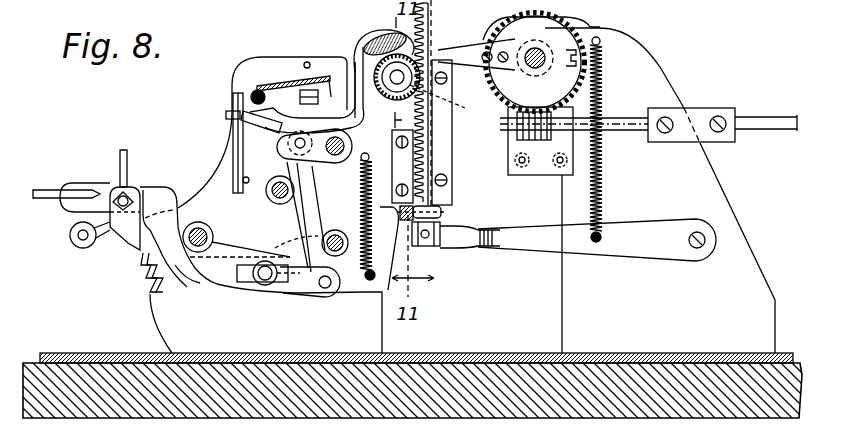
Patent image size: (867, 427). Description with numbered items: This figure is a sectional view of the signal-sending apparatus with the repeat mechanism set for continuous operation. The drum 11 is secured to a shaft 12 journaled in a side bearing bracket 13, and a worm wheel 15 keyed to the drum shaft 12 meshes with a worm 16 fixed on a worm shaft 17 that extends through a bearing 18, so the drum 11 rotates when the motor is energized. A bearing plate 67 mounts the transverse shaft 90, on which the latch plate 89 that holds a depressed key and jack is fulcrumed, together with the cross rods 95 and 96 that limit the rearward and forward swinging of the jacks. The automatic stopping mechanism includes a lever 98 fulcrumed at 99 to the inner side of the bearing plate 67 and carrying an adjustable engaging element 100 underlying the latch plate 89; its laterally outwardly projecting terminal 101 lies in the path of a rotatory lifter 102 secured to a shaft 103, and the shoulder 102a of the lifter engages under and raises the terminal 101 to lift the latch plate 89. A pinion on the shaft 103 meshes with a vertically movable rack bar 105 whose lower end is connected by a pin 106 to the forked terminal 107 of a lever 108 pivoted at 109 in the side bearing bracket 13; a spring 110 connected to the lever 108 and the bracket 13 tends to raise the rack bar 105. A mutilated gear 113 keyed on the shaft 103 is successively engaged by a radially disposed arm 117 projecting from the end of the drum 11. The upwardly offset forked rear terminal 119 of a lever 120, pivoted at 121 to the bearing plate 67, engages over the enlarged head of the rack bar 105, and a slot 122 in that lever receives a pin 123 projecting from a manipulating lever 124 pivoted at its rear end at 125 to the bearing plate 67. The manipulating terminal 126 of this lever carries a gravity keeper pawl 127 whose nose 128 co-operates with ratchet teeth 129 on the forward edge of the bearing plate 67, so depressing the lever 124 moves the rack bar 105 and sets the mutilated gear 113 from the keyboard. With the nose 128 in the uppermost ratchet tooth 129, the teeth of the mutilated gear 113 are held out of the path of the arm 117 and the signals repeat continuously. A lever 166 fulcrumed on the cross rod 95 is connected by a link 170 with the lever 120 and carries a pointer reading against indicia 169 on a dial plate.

The drum 11 is at (421, 104).
The drum shaft 12 is at (536, 70).
The side bearing bracket 13 is at (664, 72).
The worm wheel 15 is at (588, 26).
The worm 16 is at (516, 126).
The worm shaft 17 is at (774, 130).
The bearing 18 is at (730, 113).
The bearing plate 67 is at (258, 63).
The latch plate 89 is at (291, 84).
The transverse shaft 90 is at (252, 94).
The cross rod 95 is at (345, 144).
The cross rod 96 is at (278, 200).
The lever 98 is at (359, 80).
The fulcrum 99 is at (296, 148).
The adjustable engaging element 100 is at (313, 90).
The laterally outwardly projecting terminal 101 is at (378, 37).
The rotatory lifter 102 is at (440, 41).
The shoulder 102a is at (453, 142).
The shaft 103 is at (449, 101).
The rack bar 105 is at (430, 4).
The pin 106 is at (436, 279).
The forked terminal 107 is at (465, 231).
The lever 108 is at (628, 258).
The pivot 109 is at (697, 232).
The spring 110 is at (603, 192).
The mutilated gear 113 is at (394, 98).
The radially disposed arm 117 is at (452, 81).
The upwardly offset forked rear terminal 119 is at (443, 211).
The lever 120 is at (310, 298).
The pivot 121 is at (205, 230).
The slot 122 is at (253, 284).
The pin 123 is at (292, 262).
The manipulating lever 124 is at (195, 288).
The pivot 125 is at (336, 231).
The manipulating terminal 126 is at (92, 184).
The gravity keeper pawl 127 is at (98, 250).
The nose 128 is at (137, 253).
The ratchet teeth 129 is at (147, 294).
The lever 166 is at (262, 130).
The indicia 169 is at (232, 128).
The link 170 is at (316, 208).